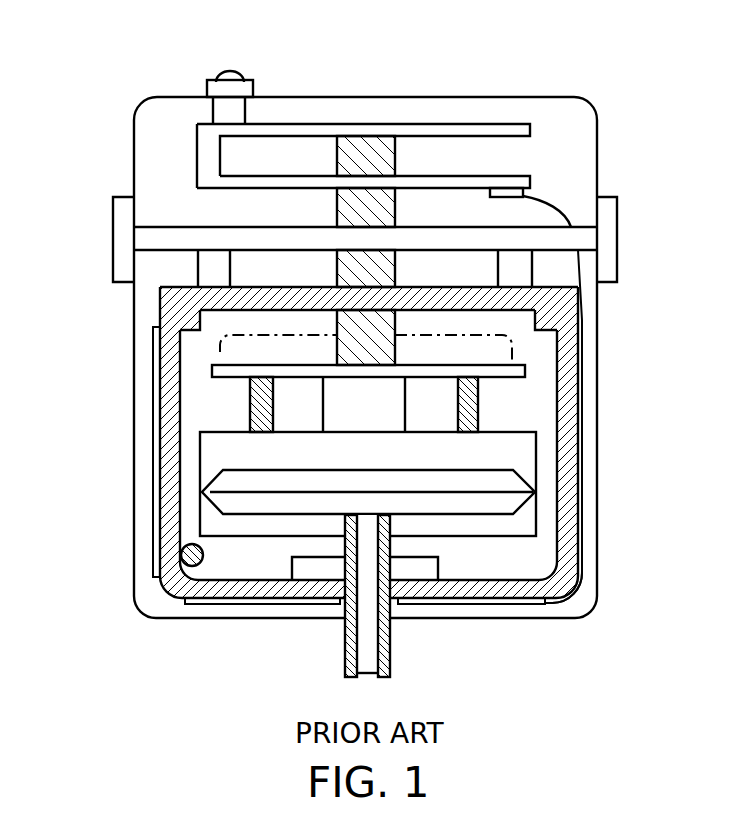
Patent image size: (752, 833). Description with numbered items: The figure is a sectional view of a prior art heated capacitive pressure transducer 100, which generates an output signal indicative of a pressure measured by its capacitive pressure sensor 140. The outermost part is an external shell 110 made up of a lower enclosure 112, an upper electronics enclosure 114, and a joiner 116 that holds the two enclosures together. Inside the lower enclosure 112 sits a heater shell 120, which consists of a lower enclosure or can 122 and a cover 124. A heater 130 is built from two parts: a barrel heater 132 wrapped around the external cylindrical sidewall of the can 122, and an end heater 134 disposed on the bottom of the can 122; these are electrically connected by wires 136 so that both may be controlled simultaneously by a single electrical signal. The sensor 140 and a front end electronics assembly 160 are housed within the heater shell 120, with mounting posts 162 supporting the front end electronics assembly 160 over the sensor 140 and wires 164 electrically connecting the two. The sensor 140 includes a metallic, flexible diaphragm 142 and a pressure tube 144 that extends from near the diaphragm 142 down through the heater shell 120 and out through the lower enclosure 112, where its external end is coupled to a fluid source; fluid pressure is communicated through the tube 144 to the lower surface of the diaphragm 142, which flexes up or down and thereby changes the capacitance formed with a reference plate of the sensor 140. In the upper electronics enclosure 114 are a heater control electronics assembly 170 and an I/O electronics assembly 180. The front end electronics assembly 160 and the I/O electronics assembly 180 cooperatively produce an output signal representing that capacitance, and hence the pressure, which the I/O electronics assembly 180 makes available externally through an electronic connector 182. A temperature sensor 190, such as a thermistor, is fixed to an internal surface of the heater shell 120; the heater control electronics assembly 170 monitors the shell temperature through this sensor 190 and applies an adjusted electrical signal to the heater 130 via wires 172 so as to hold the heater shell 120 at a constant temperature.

The heated capacitive pressure transducer 100 is at (651, 315).
The external shell 110 is at (256, 620).
The lower enclosure 112 is at (134, 577).
The upper electronics enclosure 114 is at (142, 101).
The joiner 116 is at (113, 237).
The heater shell 120 is at (165, 593).
The can 122 is at (183, 600).
The cover 124 is at (160, 293).
The heater 130 is at (580, 490).
The barrel heater 132 is at (585, 517).
The end heater 134 is at (485, 605).
The wires 136 is at (583, 593).
The capacitive pressure sensor 140 is at (537, 450).
The diaphragm 142 is at (272, 492).
The pressure tube 144 is at (390, 655).
The front end electronics assembly 160 is at (527, 370).
The mounting posts 162 is at (250, 407).
The wires 164 is at (323, 412).
The heater control electronics assembly 170 is at (500, 176).
The wires 172 is at (543, 198).
The I/O electronics assembly 180 is at (467, 124).
The electronic connector 182 is at (227, 72).
The temperature sensor 190 is at (205, 556).